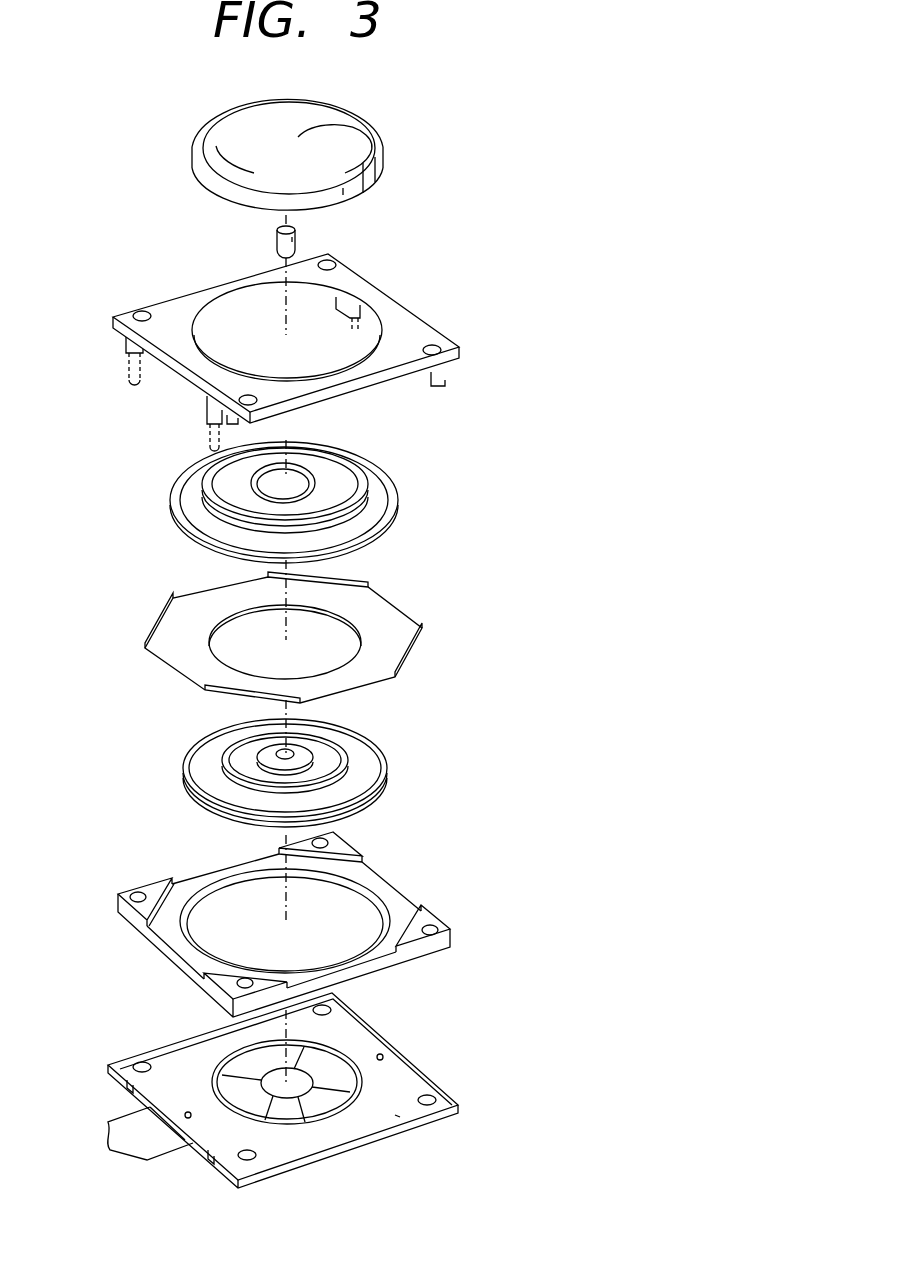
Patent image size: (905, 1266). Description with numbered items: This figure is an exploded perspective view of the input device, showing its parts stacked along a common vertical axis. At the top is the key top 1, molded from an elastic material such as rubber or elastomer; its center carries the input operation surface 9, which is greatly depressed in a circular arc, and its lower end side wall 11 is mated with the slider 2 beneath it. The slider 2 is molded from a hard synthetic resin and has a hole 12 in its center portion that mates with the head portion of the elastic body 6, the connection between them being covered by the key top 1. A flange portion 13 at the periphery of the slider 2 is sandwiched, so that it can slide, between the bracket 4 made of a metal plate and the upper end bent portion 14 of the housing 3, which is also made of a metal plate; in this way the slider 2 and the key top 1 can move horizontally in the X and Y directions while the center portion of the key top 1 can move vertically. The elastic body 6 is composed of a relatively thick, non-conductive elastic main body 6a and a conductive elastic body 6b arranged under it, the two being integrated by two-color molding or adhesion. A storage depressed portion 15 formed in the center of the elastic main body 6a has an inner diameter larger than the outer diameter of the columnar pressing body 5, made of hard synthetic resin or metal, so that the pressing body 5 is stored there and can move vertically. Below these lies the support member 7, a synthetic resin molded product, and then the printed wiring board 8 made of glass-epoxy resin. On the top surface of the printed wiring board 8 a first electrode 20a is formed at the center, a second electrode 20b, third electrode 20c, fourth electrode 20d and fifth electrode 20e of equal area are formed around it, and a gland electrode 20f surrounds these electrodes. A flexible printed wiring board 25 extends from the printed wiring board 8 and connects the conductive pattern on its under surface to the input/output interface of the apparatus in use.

The key top 1 is at (382, 158).
The input operation surface 9 is at (298, 137).
The lower end side wall 11 is at (363, 182).
The pressing body 5 is at (297, 238).
The housing 3 is at (460, 357).
The upper end bent portion 14 is at (390, 308).
The slider 2 is at (397, 502).
The flange portion 13 is at (380, 485).
The hole 12 is at (300, 482).
The bracket 4 is at (423, 637).
The elastic body 6 is at (387, 778).
The elastic main body 6a is at (367, 765).
The conductive elastic body 6b is at (380, 800).
The storage depressed portion 15 is at (297, 753).
The support member 7 is at (400, 897).
The printed wiring board 8 is at (412, 1062).
The first electrode 20a is at (293, 1090).
The second electrode 20b is at (245, 1065).
The third electrode 20c is at (240, 1105).
The fourth electrode 20d is at (323, 1105).
The fifth electrode 20e is at (325, 1068).
The gland electrode 20f is at (395, 1115).
The flexible printed wiring board 25 is at (133, 1137).